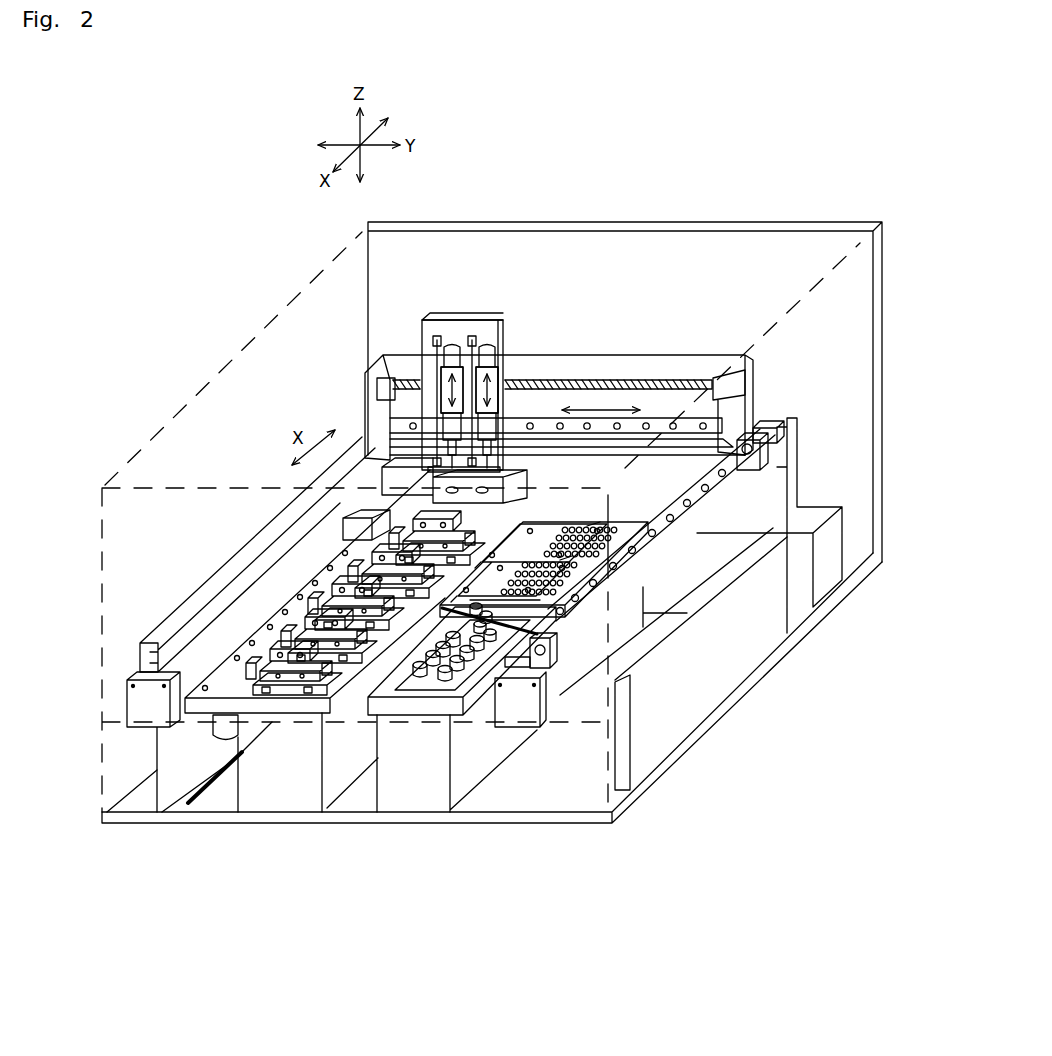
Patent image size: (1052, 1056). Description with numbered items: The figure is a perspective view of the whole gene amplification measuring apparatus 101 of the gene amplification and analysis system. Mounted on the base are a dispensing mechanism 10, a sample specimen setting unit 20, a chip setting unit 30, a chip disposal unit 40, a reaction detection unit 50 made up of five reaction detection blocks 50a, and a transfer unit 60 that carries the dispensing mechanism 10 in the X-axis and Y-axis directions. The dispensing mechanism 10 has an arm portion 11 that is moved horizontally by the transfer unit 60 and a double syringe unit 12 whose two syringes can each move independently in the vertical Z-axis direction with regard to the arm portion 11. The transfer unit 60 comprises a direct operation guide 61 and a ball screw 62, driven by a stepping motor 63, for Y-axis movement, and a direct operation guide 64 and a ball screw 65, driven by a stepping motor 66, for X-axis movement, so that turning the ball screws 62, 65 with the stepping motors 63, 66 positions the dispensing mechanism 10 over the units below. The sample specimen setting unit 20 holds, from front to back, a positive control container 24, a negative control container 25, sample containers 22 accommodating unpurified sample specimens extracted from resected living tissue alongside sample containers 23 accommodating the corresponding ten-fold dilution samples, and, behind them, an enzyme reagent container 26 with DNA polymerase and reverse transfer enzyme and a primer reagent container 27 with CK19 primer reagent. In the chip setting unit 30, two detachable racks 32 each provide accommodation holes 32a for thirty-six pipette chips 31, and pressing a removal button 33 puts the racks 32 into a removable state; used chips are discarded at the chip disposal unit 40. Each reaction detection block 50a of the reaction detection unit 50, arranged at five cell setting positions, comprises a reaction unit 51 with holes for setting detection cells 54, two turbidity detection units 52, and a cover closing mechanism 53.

The gene amplification measuring apparatus 101 is at (704, 200).
The dispensing mechanism 10 is at (490, 303).
The arm portion 11 is at (505, 335).
The double syringe unit 12 is at (440, 395).
The transfer unit 60 is at (762, 372).
The direct operation guide 61 is at (660, 424).
The ball screw 62 is at (632, 384).
The stepping motor 63 is at (722, 398).
The stepping motor 66 is at (757, 428).
The direct operation guide 64 is at (683, 465).
The ball screw 65 is at (675, 507).
The pipette chip 31 is at (582, 543).
The chip disposal unit 40 is at (505, 478).
The chip setting unit 30 is at (545, 618).
The rack 32 is at (540, 587).
The accommodation hole 32a is at (605, 522).
The removal button 33 is at (540, 602).
The cover closing mechanism 53 is at (358, 516).
The reaction detection unit 50 is at (318, 697).
The reaction detection block 50a is at (316, 662).
The turbidity detection unit 52 is at (300, 693).
The reaction unit 51 is at (290, 677).
The detection cell 54 is at (243, 752).
The sample specimen setting unit 20 is at (432, 695).
The sample container 22 is at (415, 690).
The sample container 23 is at (452, 640).
The container 24 is at (475, 632).
The container 25 is at (488, 622).
The enzyme reagent container 26 is at (510, 625).
The primer reagent container 27 is at (538, 638).